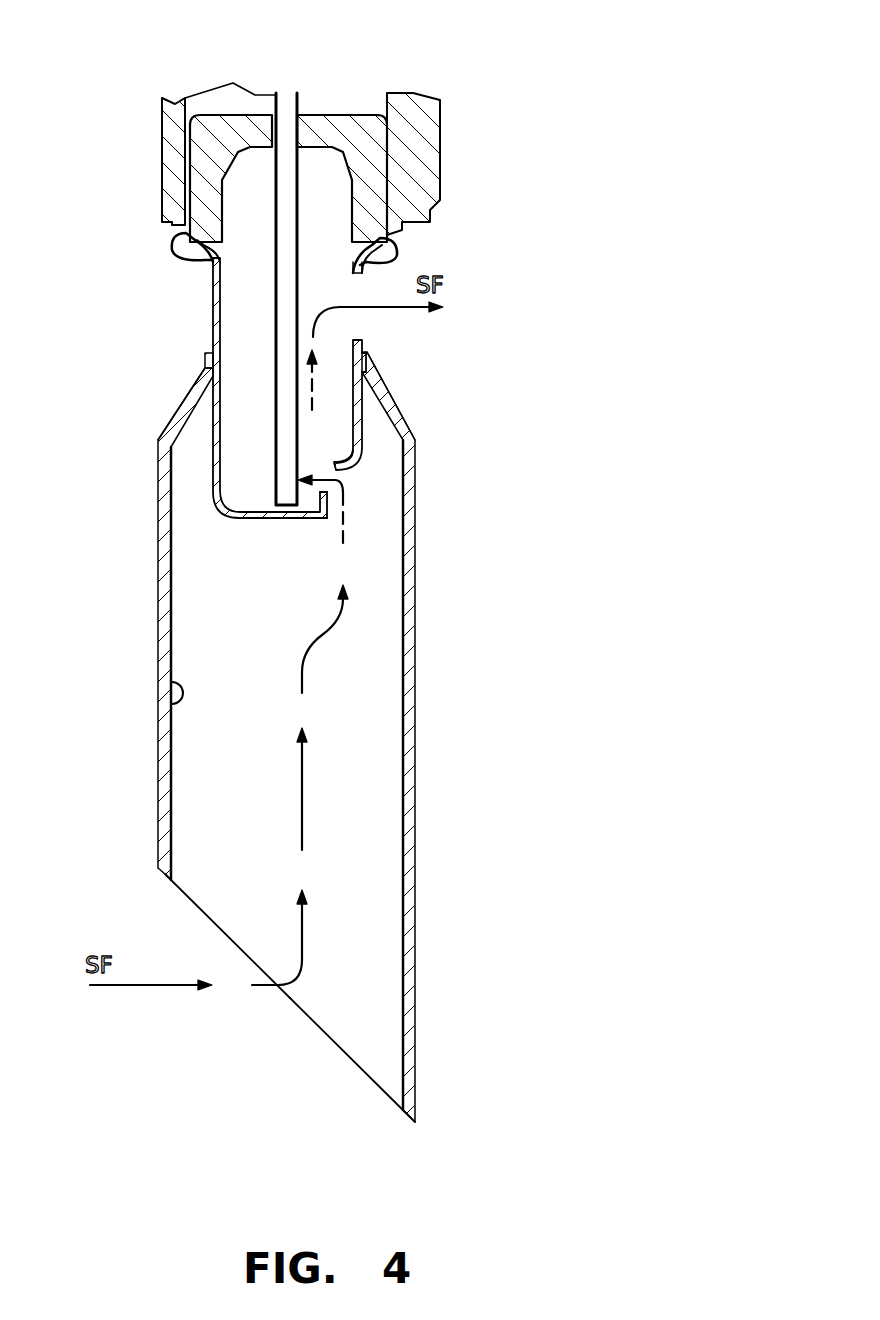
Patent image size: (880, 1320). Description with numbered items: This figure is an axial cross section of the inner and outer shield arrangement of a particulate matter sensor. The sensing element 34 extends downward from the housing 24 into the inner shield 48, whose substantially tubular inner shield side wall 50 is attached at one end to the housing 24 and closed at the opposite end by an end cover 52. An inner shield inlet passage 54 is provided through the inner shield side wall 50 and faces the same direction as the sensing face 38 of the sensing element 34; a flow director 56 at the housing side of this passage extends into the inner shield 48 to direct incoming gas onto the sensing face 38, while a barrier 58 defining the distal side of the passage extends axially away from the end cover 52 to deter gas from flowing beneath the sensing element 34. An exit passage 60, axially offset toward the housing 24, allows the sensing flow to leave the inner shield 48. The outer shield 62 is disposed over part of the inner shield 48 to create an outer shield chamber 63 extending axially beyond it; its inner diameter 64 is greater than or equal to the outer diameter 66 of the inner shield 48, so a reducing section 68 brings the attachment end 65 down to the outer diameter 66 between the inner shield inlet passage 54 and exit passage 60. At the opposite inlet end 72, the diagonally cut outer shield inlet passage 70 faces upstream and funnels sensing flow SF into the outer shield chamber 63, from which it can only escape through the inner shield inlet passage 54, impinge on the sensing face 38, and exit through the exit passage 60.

The housing 24 is at (435, 120).
The sensing element 34 is at (287, 105).
The sensing face 38 is at (298, 393).
The inner shield 48 is at (207, 285).
The inner shield side wall 50 is at (213, 317).
The end cover 52 is at (262, 520).
The inner shield inlet passage 54 is at (338, 477).
The flow director 56 is at (343, 462).
The barrier 58 is at (330, 500).
The exit passage 60 is at (362, 322).
The outer shield 62 is at (158, 638).
The outer shield chamber 63 is at (358, 742).
The inner diameter 64 is at (175, 703).
The attachment end 65 is at (205, 360).
The outer diameter 66 is at (212, 423).
The reducing section 68 is at (397, 410).
The outer shield inlet passage 70 is at (185, 895).
The inlet end 72 is at (343, 1052).